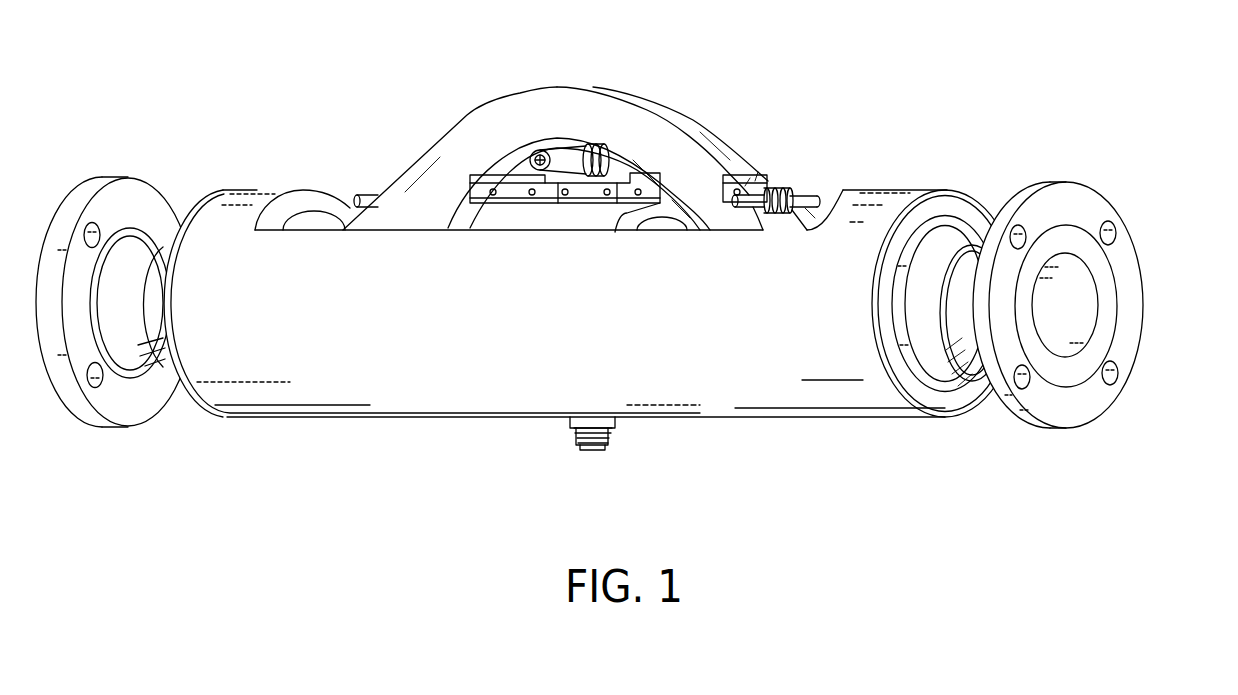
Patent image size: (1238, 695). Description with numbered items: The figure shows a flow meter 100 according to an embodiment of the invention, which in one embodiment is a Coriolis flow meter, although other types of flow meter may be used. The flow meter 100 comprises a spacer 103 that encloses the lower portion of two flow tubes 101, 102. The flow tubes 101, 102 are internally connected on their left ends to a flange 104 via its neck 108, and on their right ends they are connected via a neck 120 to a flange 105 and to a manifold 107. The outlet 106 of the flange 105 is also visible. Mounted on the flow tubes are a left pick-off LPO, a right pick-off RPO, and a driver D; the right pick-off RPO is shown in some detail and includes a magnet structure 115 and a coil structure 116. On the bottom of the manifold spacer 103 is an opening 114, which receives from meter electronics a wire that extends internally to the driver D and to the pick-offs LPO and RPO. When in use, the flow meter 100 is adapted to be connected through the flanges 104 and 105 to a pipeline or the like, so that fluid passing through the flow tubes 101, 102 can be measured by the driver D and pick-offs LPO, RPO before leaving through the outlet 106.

The flow meter 100 is at (828, 84).
The flow tube 101 is at (502, 100).
The flow tube 102 is at (660, 90).
The spacer 103 is at (415, 418).
The flange 104 is at (147, 414).
The flange 105 is at (1077, 413).
The outlet 106 is at (1088, 308).
The manifold 107 is at (957, 228).
The neck 108 is at (133, 244).
The opening 114 is at (600, 452).
The magnet structure 115 is at (752, 209).
The coil structure 116 is at (816, 200).
The neck 120 is at (955, 322).
The driver D is at (565, 168).
The left pick-off LPO is at (376, 196).
The right pick-off RPO is at (791, 195).